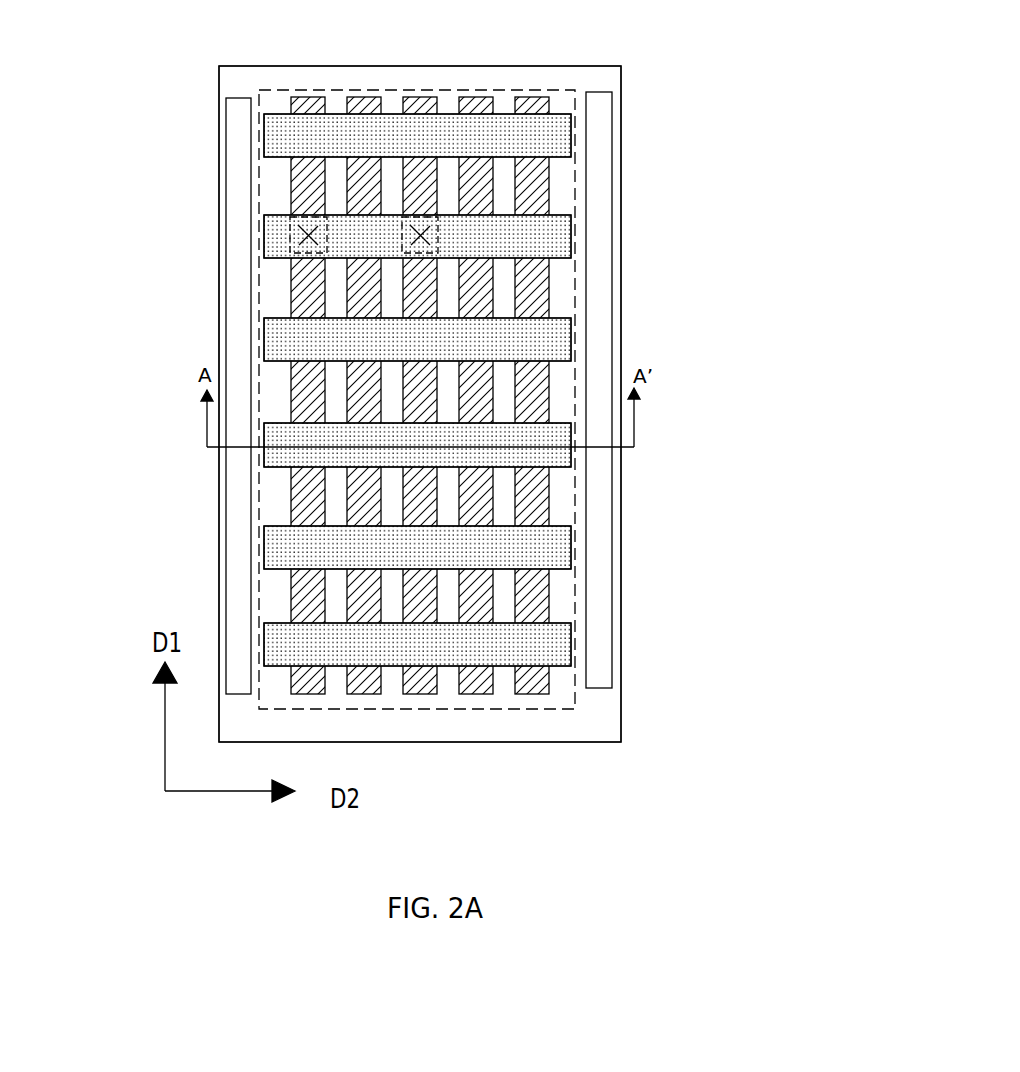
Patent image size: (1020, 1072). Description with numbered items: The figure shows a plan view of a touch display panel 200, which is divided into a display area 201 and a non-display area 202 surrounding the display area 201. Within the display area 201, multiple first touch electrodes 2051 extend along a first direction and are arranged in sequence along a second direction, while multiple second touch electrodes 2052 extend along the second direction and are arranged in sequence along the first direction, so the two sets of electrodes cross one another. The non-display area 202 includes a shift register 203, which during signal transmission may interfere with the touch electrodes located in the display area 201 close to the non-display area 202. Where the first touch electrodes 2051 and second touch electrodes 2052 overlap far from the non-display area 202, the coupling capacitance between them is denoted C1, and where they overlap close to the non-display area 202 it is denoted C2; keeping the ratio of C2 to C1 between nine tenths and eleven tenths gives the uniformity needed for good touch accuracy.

The touch display panel 200 is at (203, 46).
The display area 201 is at (560, 103).
The non-display area 202 is at (592, 717).
The shift register 203 is at (235, 517).
The first touch electrodes 2051 is at (309, 188).
The second touch electrodes 2052 is at (555, 333).
The coupling capacitance C1 is at (438, 236).
The coupling capacitance C2 is at (293, 240).